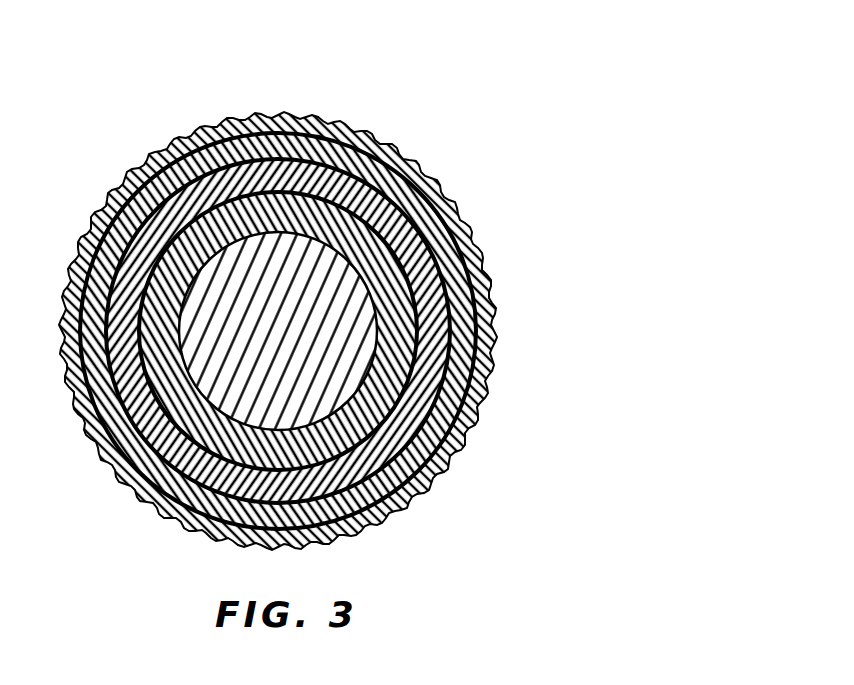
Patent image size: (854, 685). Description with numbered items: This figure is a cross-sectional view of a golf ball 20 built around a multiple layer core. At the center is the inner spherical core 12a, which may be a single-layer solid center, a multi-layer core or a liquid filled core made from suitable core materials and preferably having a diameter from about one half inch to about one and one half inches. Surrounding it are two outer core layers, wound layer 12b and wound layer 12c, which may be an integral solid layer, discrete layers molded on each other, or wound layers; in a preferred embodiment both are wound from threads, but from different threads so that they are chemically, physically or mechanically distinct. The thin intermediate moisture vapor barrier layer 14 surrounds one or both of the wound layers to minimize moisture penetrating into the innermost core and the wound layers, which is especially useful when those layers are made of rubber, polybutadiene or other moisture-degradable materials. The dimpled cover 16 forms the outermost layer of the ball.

The golf ball 20 is at (371, 295).
The dimpled cover 16 is at (377, 139).
The intermediate moisture vapor barrier layer 14 is at (460, 205).
The wound layer 12c is at (447, 281).
The wound layer 12b is at (407, 331).
The inner spherical core 12a is at (327, 342).